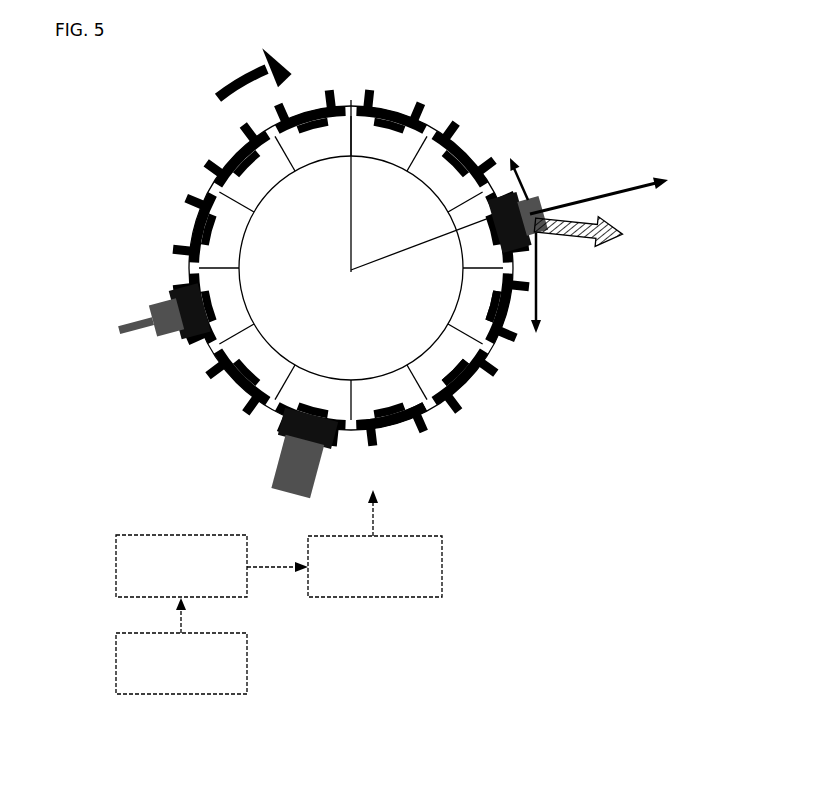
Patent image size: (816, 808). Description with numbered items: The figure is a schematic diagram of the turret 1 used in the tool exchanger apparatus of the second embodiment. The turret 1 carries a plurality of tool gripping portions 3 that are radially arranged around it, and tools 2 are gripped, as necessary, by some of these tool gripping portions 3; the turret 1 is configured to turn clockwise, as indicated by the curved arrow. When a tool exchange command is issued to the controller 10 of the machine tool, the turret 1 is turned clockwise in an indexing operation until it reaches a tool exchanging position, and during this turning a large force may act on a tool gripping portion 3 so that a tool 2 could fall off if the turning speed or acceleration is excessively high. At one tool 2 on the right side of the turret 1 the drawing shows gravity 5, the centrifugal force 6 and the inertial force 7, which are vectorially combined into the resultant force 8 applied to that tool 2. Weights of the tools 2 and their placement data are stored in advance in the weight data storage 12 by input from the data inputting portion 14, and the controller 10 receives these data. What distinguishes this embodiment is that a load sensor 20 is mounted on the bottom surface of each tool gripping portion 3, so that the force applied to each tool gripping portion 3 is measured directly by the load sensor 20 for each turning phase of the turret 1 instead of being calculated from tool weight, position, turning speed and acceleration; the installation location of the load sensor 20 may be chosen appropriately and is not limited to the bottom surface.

The turret 1 is at (537, 84).
The tool 2 is at (152, 338).
The tool gripping portion 3 is at (396, 425).
The gravity 5 is at (538, 278).
The centrifugal force 6 is at (613, 192).
The inertial force 7 is at (521, 203).
The resultant force 8 is at (615, 243).
The controller 10 is at (410, 597).
The weight data storage 12 is at (143, 535).
The data inputting portion 14 is at (143, 633).
The load sensor 20 is at (457, 368).